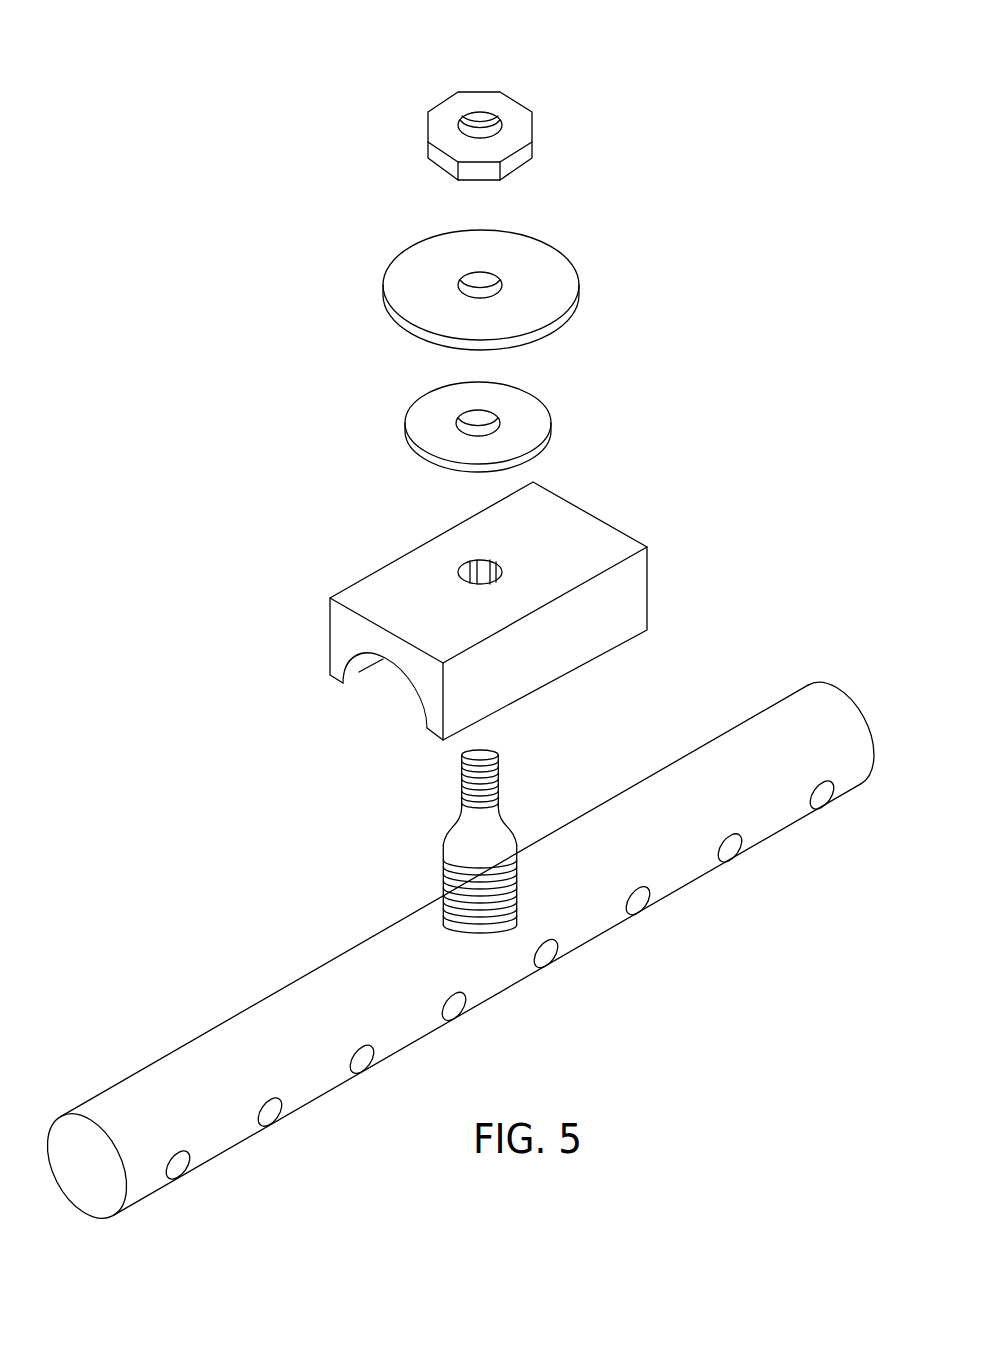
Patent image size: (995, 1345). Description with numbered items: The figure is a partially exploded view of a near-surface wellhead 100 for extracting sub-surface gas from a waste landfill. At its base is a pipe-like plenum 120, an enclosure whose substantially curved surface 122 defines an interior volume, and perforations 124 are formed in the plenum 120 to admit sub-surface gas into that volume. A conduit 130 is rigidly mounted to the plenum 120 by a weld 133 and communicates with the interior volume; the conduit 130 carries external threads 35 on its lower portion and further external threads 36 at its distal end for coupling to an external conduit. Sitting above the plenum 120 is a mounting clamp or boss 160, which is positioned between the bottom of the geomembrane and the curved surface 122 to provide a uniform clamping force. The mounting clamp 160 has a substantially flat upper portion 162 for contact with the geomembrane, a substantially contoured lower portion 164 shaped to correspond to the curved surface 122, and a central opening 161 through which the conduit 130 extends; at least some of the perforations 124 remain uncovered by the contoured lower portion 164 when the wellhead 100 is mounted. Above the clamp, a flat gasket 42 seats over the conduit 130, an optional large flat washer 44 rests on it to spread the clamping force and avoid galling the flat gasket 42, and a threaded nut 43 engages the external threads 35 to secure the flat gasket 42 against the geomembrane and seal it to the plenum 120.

The near-surface wellhead 100 is at (306, 118).
The threaded nut 43 is at (512, 110).
The large flat washer 44 is at (543, 260).
The flat gasket 42 is at (530, 408).
The mounting clamp 160 is at (457, 611).
The central opening 161 is at (470, 567).
The substantially flat upper portion 162 is at (597, 533).
The substantially contoured lower portion 164 is at (357, 670).
The conduit 130 is at (430, 866).
The external threads 36 is at (498, 773).
The external threads 35 is at (515, 875).
The weld 133 is at (492, 930).
The pipe-like plenum 120 is at (452, 956).
The substantially curved surface 122 is at (133, 1088).
The perforations 124 is at (732, 852).